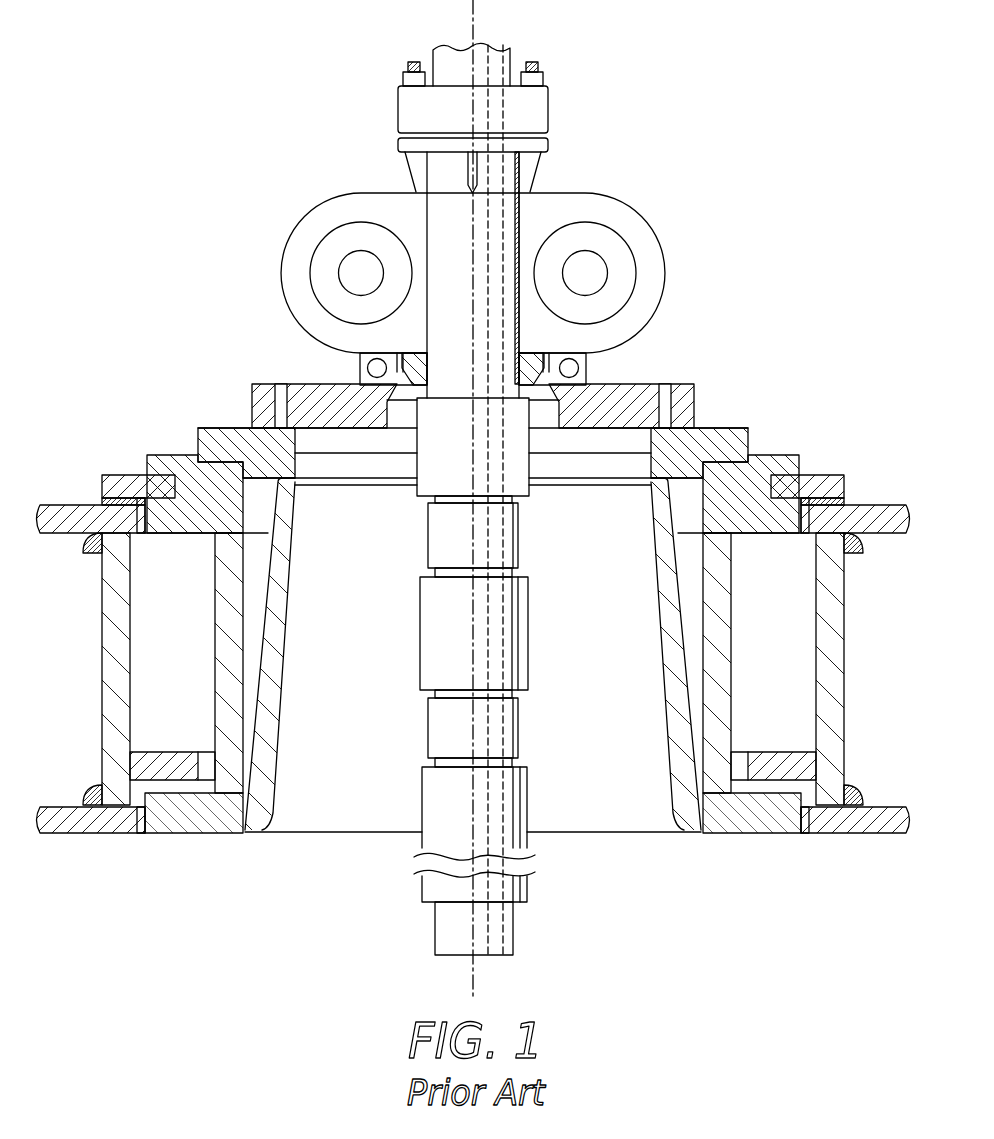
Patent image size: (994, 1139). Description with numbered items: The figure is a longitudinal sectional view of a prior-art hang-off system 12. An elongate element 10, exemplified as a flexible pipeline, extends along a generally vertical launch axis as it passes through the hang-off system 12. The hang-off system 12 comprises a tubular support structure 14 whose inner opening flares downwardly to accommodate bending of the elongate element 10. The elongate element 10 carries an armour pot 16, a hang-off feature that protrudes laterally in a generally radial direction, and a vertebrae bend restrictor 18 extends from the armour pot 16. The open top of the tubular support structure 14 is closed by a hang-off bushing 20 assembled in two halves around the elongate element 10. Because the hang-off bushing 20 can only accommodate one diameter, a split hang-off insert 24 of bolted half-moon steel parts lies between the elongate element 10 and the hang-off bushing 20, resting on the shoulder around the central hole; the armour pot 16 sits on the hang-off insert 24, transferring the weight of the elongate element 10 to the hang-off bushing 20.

The elongate element 10 is at (452, 60).
The hang-off system 12 is at (172, 362).
The tubular support structure 14 is at (787, 455).
The armour pot 16 is at (668, 282).
The vertebrae bend restrictor 18 is at (420, 627).
The hang-off bushing 20 is at (697, 400).
The hang-off insert 24 is at (361, 372).